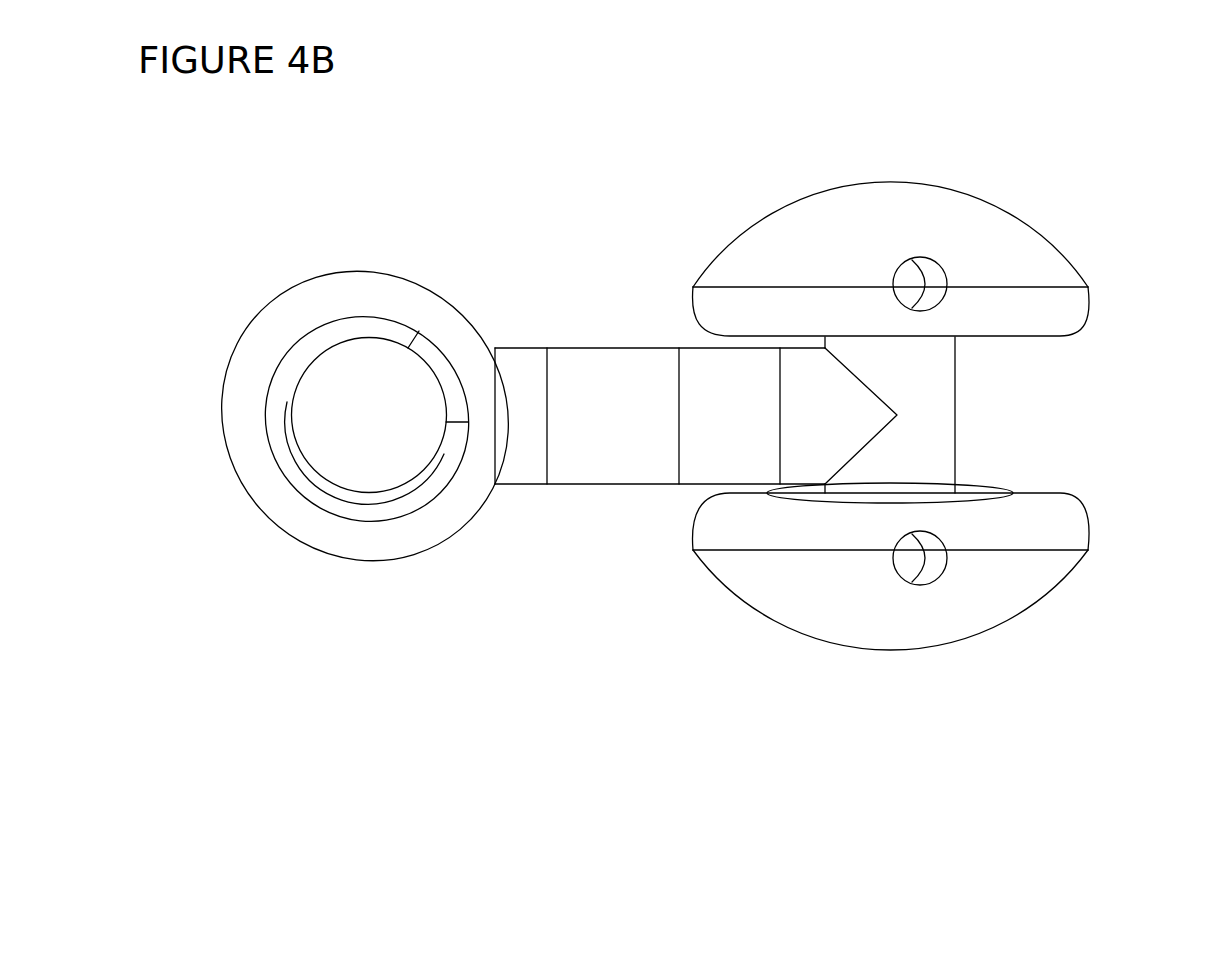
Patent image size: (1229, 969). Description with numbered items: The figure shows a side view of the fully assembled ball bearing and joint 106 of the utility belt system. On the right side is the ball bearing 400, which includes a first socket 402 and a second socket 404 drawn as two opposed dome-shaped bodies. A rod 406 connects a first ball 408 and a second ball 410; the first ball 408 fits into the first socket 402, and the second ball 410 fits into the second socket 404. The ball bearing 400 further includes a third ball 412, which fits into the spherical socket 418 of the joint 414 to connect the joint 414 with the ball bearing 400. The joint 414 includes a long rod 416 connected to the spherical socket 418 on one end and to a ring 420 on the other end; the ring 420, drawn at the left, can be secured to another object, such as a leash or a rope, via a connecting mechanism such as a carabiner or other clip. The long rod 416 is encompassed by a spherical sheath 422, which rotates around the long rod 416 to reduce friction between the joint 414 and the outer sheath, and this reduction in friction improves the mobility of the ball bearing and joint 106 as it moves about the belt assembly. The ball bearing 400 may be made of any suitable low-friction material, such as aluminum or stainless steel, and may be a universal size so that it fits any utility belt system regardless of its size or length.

The ball bearing and joint 106 is at (623, 117).
The ball bearing 400 is at (950, 419).
The first socket 402 is at (890, 206).
The second socket 404 is at (890, 623).
The rod 406 is at (908, 377).
The first ball 408 is at (895, 203).
The second ball 410 is at (946, 605).
The third ball 412 is at (677, 518).
The joint 414 is at (365, 428).
The long rod 416 is at (558, 480).
The spherical socket 418 is at (733, 455).
The ring 420 is at (310, 530).
The spherical sheath 422 is at (585, 455).